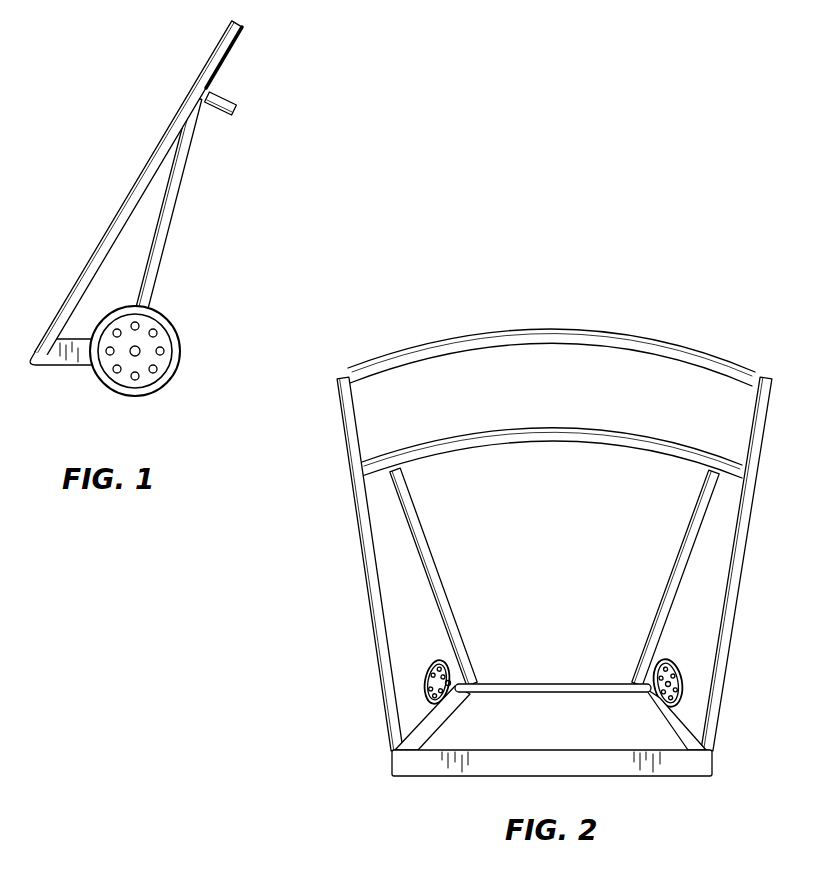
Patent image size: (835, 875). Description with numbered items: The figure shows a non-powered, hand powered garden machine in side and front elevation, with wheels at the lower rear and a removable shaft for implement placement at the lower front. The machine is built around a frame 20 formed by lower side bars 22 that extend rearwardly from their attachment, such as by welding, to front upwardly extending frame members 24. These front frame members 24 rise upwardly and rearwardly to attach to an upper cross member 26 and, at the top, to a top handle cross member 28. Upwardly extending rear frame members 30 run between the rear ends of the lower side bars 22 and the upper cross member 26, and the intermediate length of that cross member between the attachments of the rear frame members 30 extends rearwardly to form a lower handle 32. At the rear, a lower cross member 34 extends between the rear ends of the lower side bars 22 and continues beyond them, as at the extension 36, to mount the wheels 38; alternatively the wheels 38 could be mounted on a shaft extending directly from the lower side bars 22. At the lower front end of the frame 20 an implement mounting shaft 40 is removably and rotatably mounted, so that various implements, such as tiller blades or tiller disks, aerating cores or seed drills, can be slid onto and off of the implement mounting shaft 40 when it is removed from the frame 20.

In FIG. 1, the frame 20 is at (118, 178).
In FIG. 2, the frame 20 is at (330, 555).
In FIG. 1, the lower side bars 22 is at (62, 364).
In FIG. 2, the lower side bars 22 is at (437, 708).
In FIG. 1, the front upwardly extending frame members 24 is at (95, 248).
In FIG. 2, the front upwardly extending frame members 24 is at (365, 603).
In FIG. 1, the upper cross member 26 is at (208, 110).
In FIG. 2, the upper cross member 26 is at (687, 460).
In FIG. 1, the top handle cross member 28 is at (243, 33).
In FIG. 2, the top handle cross member 28 is at (571, 343).
In FIG. 1, the rear frame members 30 is at (165, 248).
In FIG. 2, the rear frame members 30 is at (433, 563).
In FIG. 1, the lower handle 32 is at (233, 97).
In FIG. 2, the lower handle 32 is at (550, 442).
In FIG. 2, the lower cross member 34 is at (578, 683).
In FIG. 1, the extension of lower cross member 36 is at (140, 349).
In FIG. 2, the extension of lower cross member 36 is at (448, 683).
In FIG. 1, the wheels 38 is at (163, 372).
In FIG. 2, the wheels 38 is at (430, 661).
In FIG. 2, the implement mounting shaft 40 is at (418, 777).